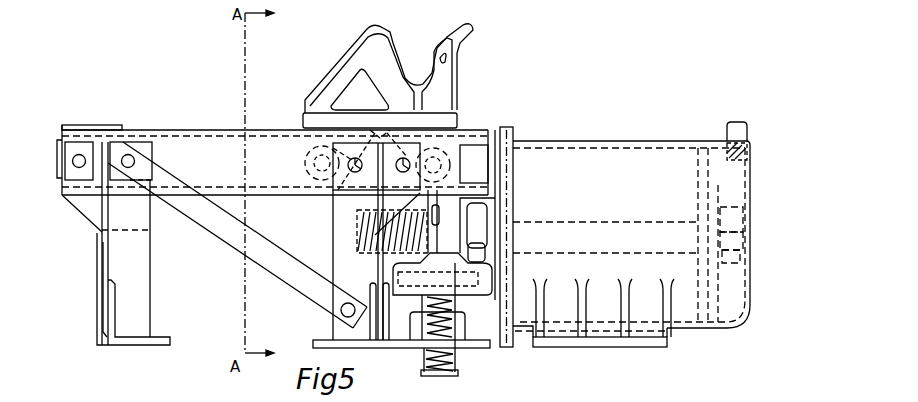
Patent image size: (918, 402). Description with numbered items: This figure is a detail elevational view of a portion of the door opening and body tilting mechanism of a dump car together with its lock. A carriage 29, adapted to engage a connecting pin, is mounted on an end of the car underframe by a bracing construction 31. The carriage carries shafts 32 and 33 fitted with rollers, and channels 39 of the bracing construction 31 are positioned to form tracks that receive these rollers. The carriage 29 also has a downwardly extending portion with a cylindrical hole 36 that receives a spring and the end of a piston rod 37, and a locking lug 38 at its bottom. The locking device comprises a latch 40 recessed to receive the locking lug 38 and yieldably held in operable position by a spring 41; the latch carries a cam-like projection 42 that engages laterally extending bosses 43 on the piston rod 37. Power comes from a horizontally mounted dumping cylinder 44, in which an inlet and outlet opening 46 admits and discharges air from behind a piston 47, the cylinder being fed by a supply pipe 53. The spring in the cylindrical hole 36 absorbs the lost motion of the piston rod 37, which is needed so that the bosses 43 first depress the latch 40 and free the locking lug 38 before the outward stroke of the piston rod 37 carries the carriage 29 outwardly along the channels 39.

The carriage 29 is at (335, 67).
The bracing construction 31 is at (105, 262).
The shaft 32 is at (320, 163).
The shaft 33 is at (433, 165).
The cylindrical hole 36 is at (360, 232).
The piston rod 37 is at (567, 233).
The locking lug 38 is at (425, 272).
The channel 39 is at (217, 150).
The latch 40 is at (466, 273).
The spring 41 is at (457, 354).
The cam-like projection 42 is at (447, 257).
The laterally extending boss 43 is at (478, 258).
The dumping cylinder 44 is at (635, 157).
The inlet and outlet opening 46 is at (740, 156).
The piston 47 is at (703, 163).
The supply pipe 53 is at (742, 127).